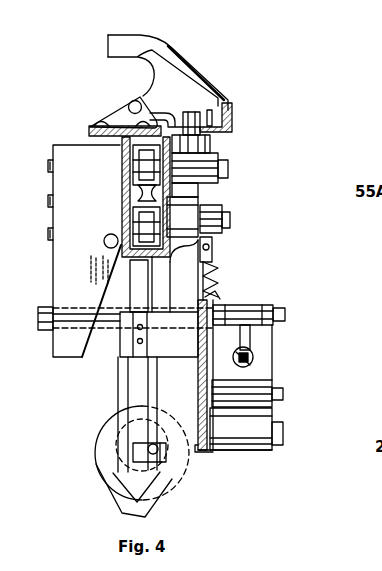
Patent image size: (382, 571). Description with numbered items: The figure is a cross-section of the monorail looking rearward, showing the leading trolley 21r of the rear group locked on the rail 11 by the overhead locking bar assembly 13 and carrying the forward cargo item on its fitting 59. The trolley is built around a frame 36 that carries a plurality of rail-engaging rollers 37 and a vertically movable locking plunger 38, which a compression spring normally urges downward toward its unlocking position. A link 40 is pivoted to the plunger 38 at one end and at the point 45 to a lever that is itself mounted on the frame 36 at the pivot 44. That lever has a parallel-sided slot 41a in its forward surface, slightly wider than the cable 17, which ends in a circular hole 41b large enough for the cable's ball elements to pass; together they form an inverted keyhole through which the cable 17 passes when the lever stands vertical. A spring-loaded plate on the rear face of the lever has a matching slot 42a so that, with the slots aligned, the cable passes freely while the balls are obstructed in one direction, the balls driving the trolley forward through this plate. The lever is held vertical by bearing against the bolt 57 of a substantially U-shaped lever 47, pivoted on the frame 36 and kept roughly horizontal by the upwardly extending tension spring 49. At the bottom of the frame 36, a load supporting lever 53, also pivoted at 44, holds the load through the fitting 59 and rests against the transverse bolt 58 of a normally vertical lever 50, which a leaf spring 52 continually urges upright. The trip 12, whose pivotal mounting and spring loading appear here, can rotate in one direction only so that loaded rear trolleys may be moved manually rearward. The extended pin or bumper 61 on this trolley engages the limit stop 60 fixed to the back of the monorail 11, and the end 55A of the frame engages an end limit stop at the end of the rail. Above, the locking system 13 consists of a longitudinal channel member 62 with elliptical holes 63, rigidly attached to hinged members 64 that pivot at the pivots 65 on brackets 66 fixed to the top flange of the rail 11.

The hinged member 64 is at (134, 36).
The overhead locking bar assembly 13 is at (190, 56).
The pivot 65 is at (131, 101).
The bracket 66 is at (103, 120).
The rail 11 is at (102, 146).
The limit stop 60 is at (62, 143).
The rail-engaging roller 37 is at (127, 165).
The locking plunger 38 is at (190, 110).
The longitudinal channel member 62 is at (234, 118).
The elliptical hole 63 is at (208, 123).
The frame 36 is at (217, 144).
The end of trolley frame 55A is at (196, 227).
The leading trolley of the rear group 21r is at (229, 252).
The tension spring 49 is at (217, 273).
The link 40 is at (215, 289).
The trip 12 is at (163, 271).
The normally vertical lever 50 is at (137, 302).
The extended pin 61 is at (53, 335).
The leaf spring 52 is at (147, 367).
The load supporting lever 53 is at (115, 442).
The transverse bolt 58 is at (125, 458).
The fitting 59 is at (167, 500).
The bolt 57 is at (262, 310).
The slot 41a is at (242, 313).
The U-shaped lever 47 is at (280, 338).
The slot 42a is at (257, 342).
The circular hole 41b is at (255, 358).
The cable 17 is at (240, 360).
The pivot point 45 is at (283, 398).
The pivot 44 is at (283, 433).